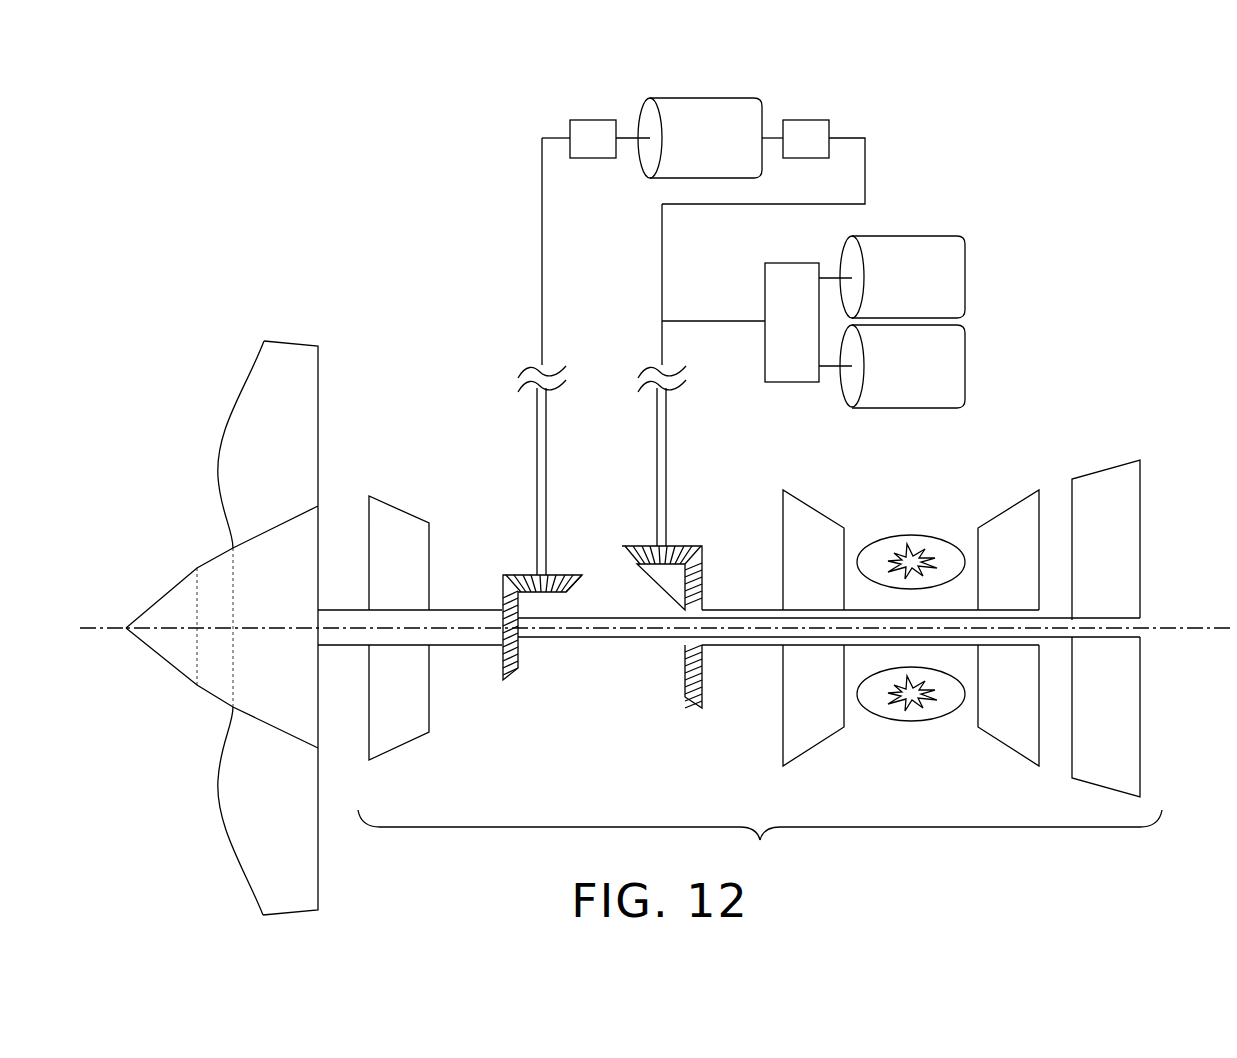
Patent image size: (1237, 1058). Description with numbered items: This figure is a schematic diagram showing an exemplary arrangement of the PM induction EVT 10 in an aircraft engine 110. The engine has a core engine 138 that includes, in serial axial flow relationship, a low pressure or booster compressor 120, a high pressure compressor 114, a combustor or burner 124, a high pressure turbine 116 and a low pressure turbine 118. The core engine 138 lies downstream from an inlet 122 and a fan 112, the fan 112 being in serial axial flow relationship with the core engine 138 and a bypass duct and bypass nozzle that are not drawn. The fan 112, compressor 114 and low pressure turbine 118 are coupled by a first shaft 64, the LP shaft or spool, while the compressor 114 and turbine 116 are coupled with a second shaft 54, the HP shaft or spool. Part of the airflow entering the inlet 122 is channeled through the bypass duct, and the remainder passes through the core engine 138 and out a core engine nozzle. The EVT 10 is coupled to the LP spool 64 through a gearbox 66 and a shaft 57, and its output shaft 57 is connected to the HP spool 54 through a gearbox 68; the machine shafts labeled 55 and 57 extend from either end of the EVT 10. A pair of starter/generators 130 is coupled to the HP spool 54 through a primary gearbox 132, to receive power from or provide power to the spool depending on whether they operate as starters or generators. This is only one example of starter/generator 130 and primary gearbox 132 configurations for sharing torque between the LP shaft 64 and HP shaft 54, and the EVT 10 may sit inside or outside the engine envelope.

The PM induction EVT 10 is at (693, 98).
The second shaft 54 is at (866, 160).
The first machine shaft 55 is at (628, 142).
The output shaft 57 is at (771, 142).
The first shaft 64 is at (542, 168).
The gearbox 66 is at (590, 120).
The gearbox 68 is at (800, 120).
The aircraft engine 110 is at (1073, 168).
The fan 112 is at (283, 340).
The high pressure compressor 114 is at (818, 505).
The high pressure turbine 116 is at (1028, 495).
The low pressure turbine 118 is at (1120, 460).
The booster compressor 120 is at (409, 517).
The inlet 122 is at (173, 452).
The combustor 124 is at (924, 520).
The starter/generators 130 is at (967, 268).
The primary gearbox 132 is at (765, 280).
The core engine 138 is at (760, 840).